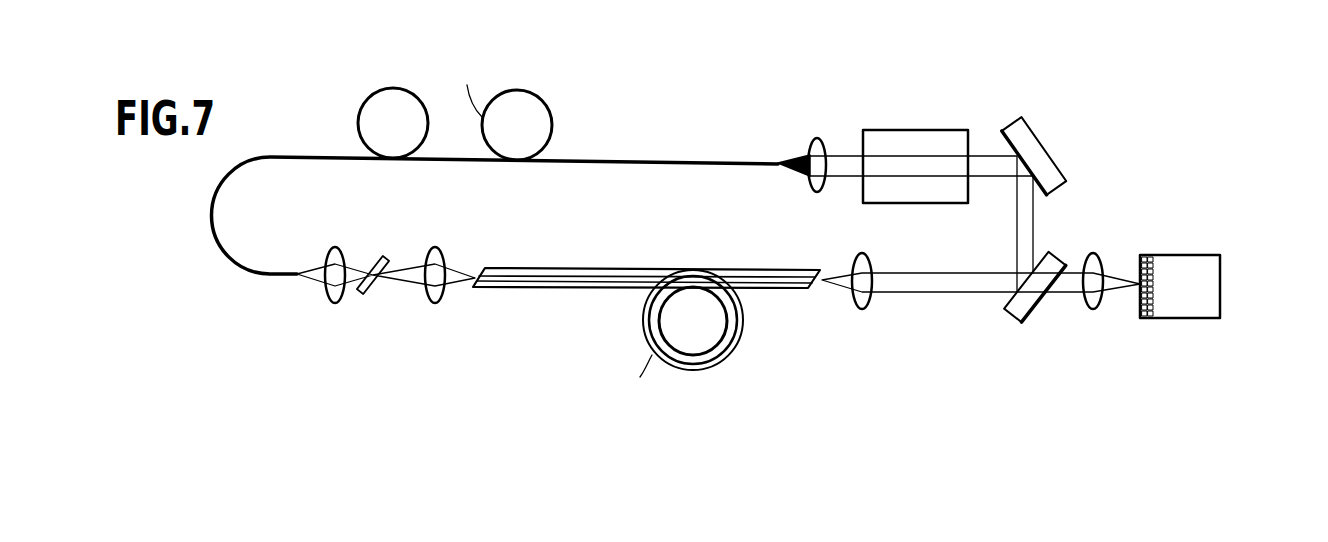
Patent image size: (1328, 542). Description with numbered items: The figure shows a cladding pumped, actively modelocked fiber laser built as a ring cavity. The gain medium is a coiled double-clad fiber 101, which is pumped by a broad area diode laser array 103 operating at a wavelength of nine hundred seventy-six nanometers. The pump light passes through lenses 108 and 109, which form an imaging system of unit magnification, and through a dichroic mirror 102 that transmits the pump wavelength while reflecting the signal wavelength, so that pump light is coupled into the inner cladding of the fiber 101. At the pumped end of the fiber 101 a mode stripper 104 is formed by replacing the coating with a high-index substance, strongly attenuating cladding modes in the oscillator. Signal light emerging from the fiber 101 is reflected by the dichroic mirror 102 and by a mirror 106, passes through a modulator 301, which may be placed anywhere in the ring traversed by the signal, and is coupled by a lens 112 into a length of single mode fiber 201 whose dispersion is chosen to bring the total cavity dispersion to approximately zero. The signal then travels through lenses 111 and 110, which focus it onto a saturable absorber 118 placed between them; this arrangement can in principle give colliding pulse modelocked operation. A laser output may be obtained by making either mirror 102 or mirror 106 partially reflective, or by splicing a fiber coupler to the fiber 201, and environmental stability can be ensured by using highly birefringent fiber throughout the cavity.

The single mode fiber 201 is at (553, 135).
The modulator 301 is at (883, 130).
The mirror 106 is at (1050, 150).
The lens 112 is at (807, 185).
The lens 111 is at (327, 250).
The lens 110 is at (430, 250).
The saturable absorber 118 is at (370, 290).
The mode stripper 104 is at (560, 268).
The double-clad fiber 101 is at (642, 327).
The lens 109 is at (863, 308).
The dichroic mirror 102 is at (1020, 320).
The lens 108 is at (1093, 310).
The diode laser array 103 is at (1158, 320).